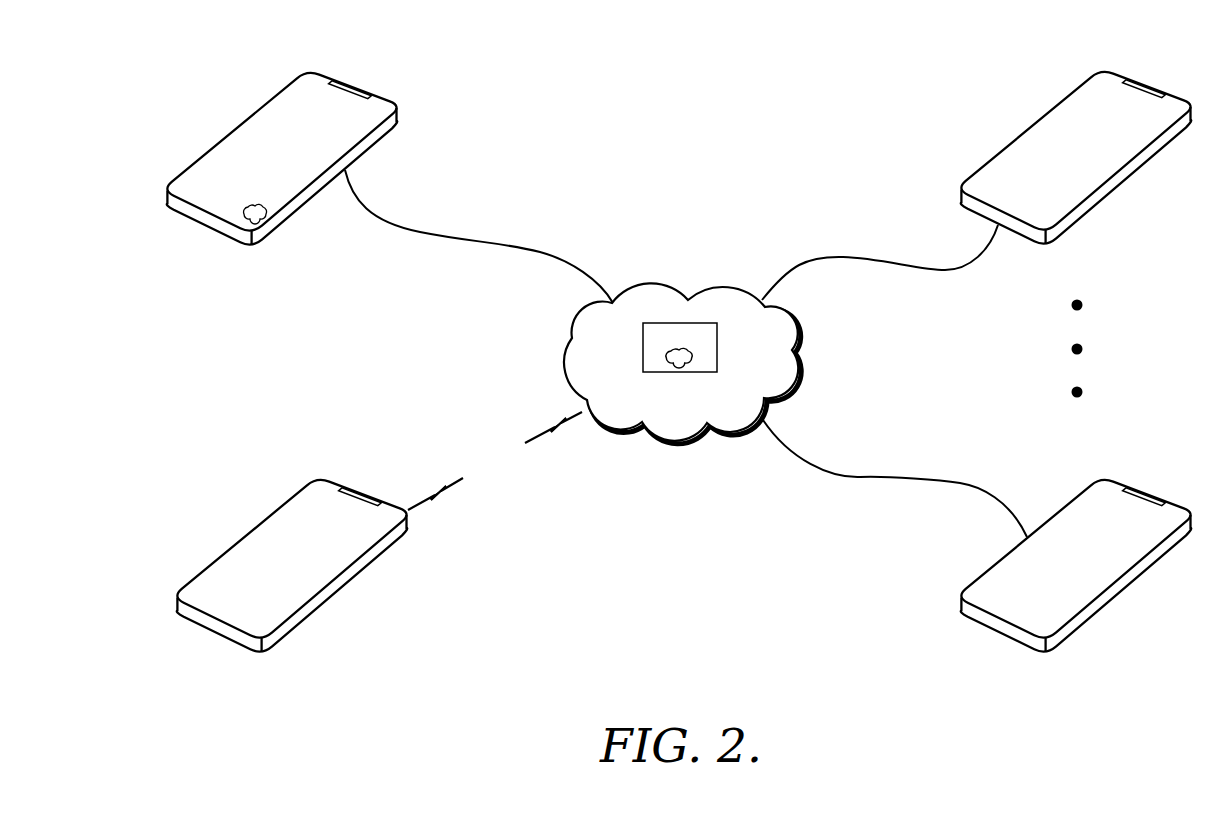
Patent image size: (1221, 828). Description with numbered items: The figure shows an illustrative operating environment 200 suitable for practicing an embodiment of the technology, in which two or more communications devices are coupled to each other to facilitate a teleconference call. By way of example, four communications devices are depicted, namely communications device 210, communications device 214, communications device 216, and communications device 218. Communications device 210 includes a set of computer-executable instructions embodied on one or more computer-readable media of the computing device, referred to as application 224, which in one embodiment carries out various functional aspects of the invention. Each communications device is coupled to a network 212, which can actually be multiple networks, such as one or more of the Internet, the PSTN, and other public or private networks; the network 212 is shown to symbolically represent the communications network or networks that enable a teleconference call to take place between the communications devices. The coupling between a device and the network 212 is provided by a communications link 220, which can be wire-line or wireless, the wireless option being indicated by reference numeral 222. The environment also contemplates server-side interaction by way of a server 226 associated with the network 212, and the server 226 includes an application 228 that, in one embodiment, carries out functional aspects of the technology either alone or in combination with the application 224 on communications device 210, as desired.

The operating environment 200 is at (936, 39).
The communications device 210 is at (380, 145).
The network 212 is at (682, 442).
The communications device 214 is at (338, 592).
The communications device 216 is at (1125, 183).
The communications device 218 is at (1125, 591).
The communications link 220 is at (522, 242).
The wireless link indication 222 is at (586, 436).
The application 224 is at (255, 222).
The server 226 is at (643, 337).
The application 228 is at (692, 355).